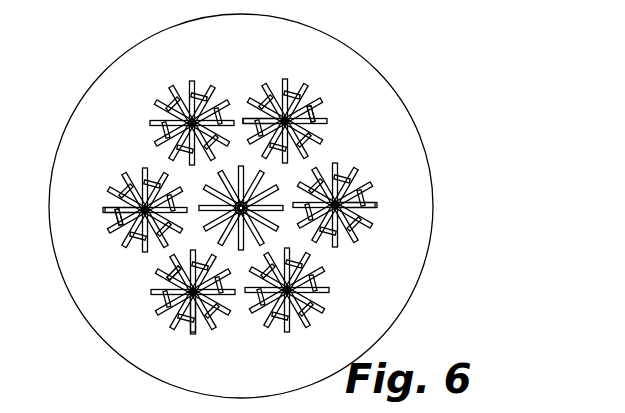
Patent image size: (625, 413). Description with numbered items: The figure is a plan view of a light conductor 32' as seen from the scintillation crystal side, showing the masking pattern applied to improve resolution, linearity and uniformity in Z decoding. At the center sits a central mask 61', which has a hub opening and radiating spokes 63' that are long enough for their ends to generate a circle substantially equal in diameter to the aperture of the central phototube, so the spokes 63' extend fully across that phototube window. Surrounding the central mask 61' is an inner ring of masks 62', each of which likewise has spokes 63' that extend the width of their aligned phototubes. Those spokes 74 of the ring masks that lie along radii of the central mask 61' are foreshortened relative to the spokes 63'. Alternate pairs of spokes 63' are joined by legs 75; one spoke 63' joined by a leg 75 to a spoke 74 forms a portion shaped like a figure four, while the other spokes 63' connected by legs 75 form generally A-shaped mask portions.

The light conductor 32' is at (251, 206).
The central mask 61' is at (253, 208).
The masks of the inner ring 62' is at (270, 186).
The spokes 63' is at (254, 256).
The outwardly extending spokes 74 is at (305, 95).
The legs 75 is at (313, 118).